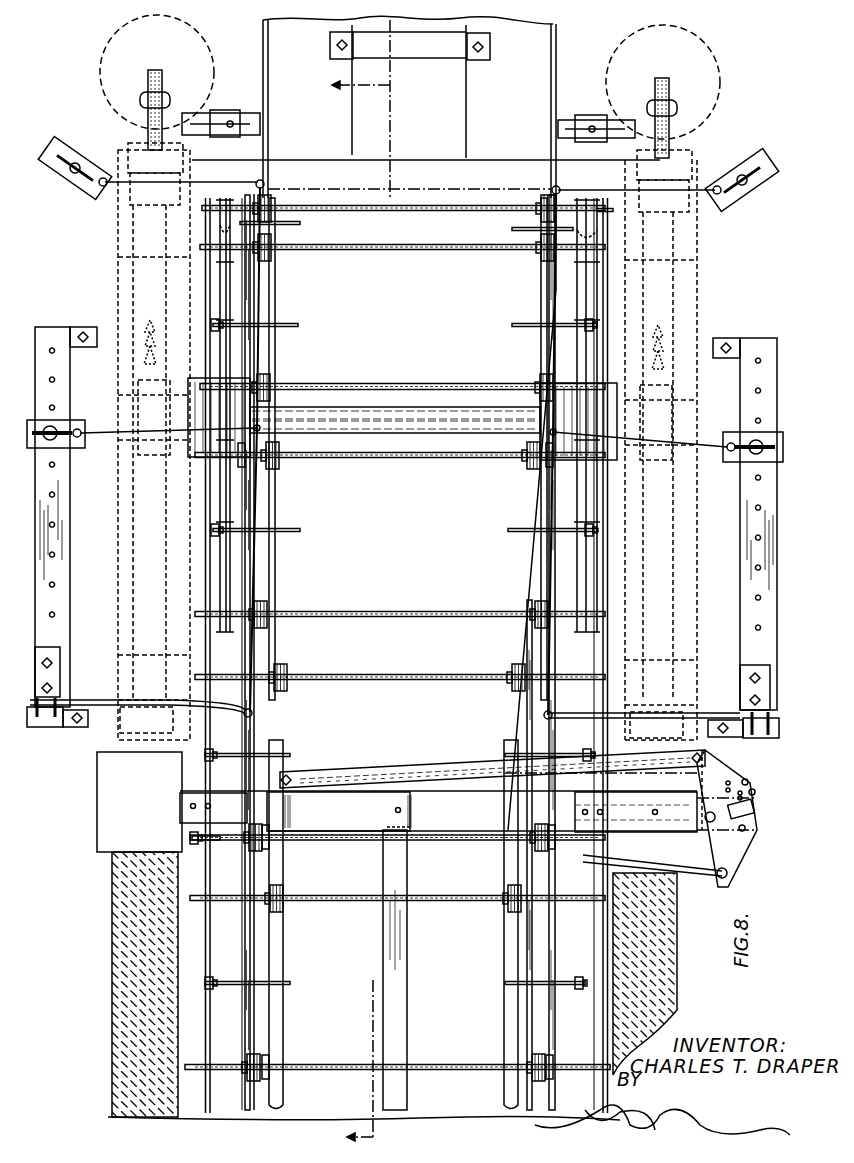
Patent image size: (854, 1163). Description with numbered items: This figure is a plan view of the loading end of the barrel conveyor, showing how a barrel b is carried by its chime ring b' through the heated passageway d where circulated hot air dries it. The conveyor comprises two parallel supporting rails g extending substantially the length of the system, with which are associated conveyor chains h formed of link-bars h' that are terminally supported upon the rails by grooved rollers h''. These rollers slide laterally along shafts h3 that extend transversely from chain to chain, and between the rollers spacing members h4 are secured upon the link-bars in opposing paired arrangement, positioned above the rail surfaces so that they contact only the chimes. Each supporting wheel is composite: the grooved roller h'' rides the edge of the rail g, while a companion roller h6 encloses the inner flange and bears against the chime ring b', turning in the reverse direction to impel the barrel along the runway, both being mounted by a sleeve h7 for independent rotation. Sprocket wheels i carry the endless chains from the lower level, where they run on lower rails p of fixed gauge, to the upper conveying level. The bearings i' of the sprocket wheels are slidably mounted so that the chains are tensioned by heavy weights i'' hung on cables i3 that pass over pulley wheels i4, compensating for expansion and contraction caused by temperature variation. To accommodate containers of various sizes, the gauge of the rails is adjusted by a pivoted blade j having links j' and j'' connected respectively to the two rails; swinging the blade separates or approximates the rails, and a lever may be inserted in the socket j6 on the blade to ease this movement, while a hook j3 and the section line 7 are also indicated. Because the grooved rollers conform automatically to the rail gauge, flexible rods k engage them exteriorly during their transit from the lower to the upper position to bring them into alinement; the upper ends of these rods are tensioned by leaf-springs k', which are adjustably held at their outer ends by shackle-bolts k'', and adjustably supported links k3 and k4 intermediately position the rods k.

The barrel b is at (426, 129).
The chime ring b' is at (408, 166).
The section line 7 is at (345, 585).
The heated passageway d is at (178, 985).
The supporting rail g is at (242, 1005).
The conveyor chain h is at (391, 655).
The link-bar h' is at (400, 415).
The grooved roller h'' is at (402, 774).
The shaft h3 is at (350, 212).
The spacing member h4 is at (300, 530).
The roller h6 is at (279, 470).
The sleeve h7 is at (290, 460).
The sprocket wheel i is at (400, 652).
The bearing i' is at (395, 390).
The weight i'' is at (410, 77).
The cable i3 is at (118, 280).
The pulley wheel i4 is at (148, 78).
The pivoted blade j is at (735, 818).
The link j' is at (655, 879).
The link j'' is at (492, 772).
The hook j3 is at (753, 810).
The socket j6 is at (755, 792).
The flexible rod k is at (398, 649).
The leaf-spring k' is at (403, 523).
The shackle-bolt k'' is at (397, 710).
The link k3 is at (83, 440).
The link k4 is at (95, 200).
The lower rail p is at (284, 750).